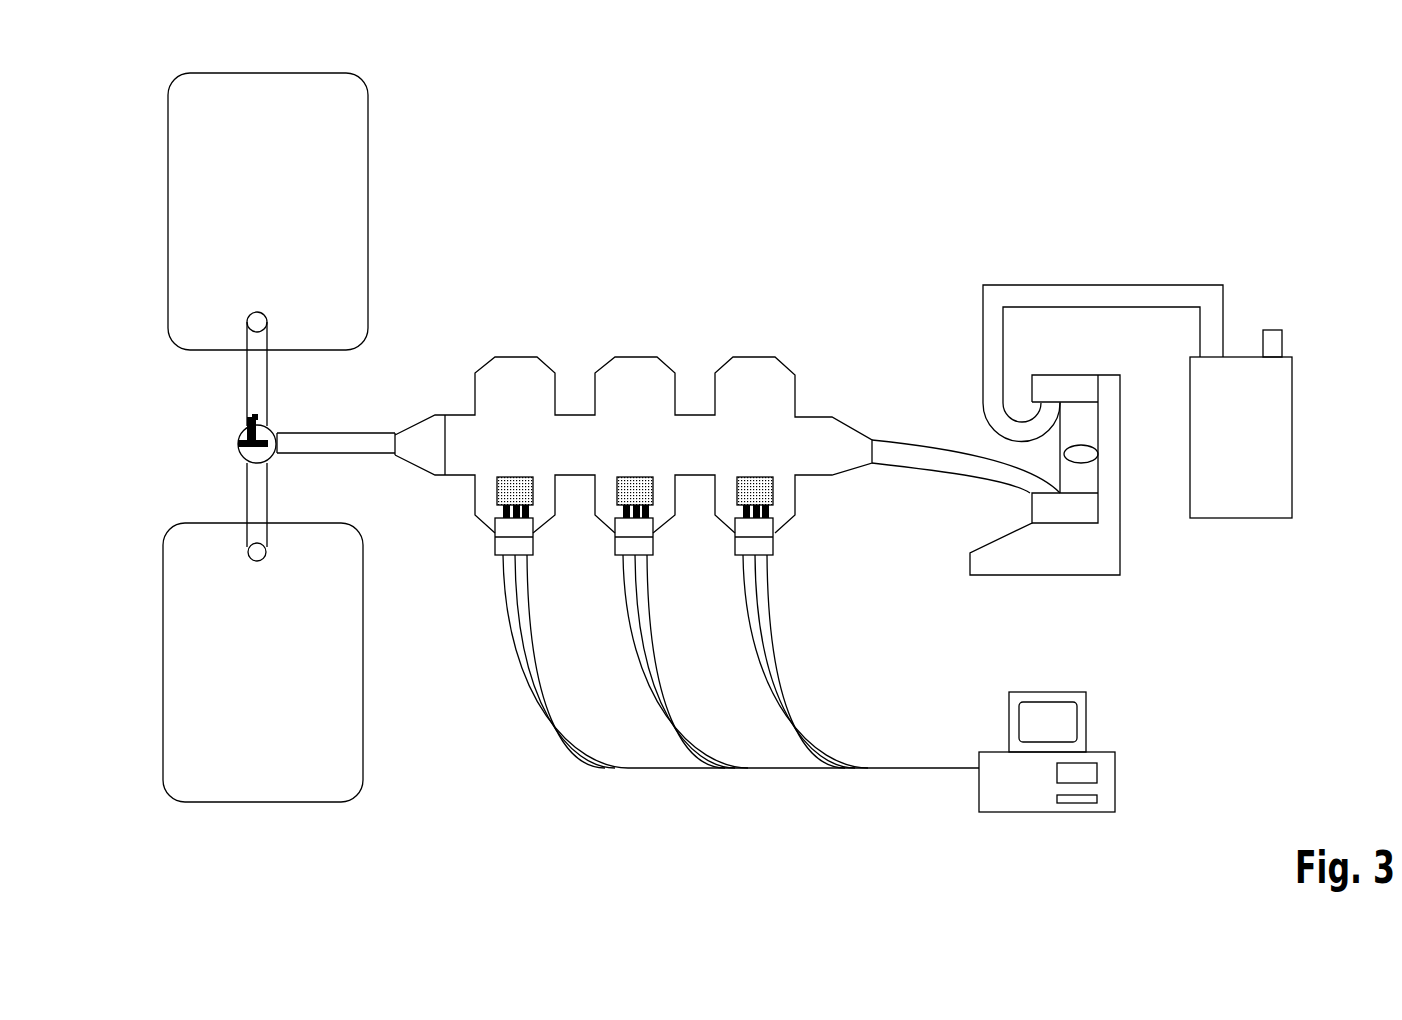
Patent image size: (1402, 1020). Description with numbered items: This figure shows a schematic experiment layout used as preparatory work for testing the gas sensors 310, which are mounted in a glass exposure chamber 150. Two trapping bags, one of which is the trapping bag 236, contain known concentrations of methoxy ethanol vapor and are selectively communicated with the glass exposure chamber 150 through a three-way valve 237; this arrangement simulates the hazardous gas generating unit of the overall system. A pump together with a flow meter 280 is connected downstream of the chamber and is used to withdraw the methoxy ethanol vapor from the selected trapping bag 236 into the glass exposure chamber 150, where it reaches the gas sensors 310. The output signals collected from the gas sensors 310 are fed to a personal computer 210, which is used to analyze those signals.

The trapping bag 236 is at (198, 275).
The three-way valve 237 is at (267, 443).
The glass exposure chamber 150 is at (763, 375).
The gas sensors 310 is at (757, 497).
The pump together with a flow meter 280 is at (1122, 278).
The personal computer 210 is at (1027, 797).